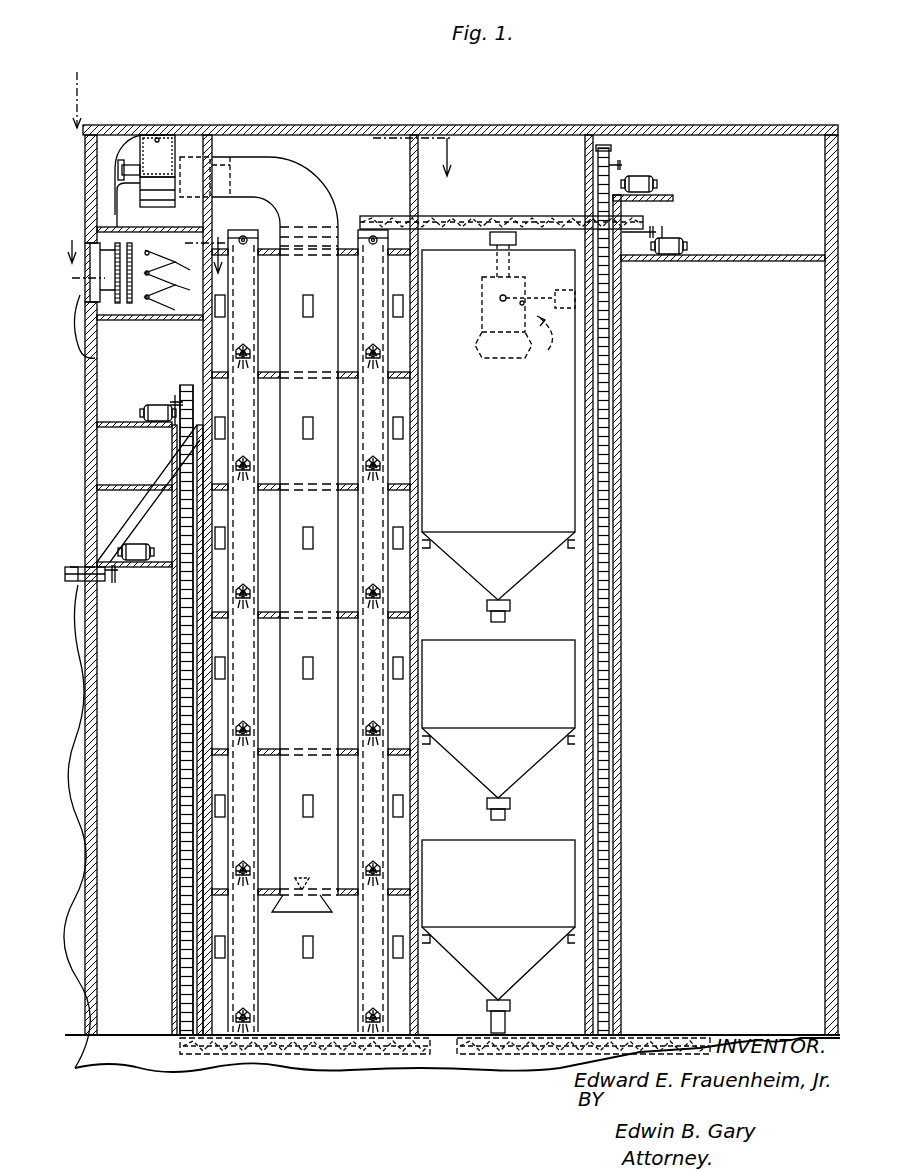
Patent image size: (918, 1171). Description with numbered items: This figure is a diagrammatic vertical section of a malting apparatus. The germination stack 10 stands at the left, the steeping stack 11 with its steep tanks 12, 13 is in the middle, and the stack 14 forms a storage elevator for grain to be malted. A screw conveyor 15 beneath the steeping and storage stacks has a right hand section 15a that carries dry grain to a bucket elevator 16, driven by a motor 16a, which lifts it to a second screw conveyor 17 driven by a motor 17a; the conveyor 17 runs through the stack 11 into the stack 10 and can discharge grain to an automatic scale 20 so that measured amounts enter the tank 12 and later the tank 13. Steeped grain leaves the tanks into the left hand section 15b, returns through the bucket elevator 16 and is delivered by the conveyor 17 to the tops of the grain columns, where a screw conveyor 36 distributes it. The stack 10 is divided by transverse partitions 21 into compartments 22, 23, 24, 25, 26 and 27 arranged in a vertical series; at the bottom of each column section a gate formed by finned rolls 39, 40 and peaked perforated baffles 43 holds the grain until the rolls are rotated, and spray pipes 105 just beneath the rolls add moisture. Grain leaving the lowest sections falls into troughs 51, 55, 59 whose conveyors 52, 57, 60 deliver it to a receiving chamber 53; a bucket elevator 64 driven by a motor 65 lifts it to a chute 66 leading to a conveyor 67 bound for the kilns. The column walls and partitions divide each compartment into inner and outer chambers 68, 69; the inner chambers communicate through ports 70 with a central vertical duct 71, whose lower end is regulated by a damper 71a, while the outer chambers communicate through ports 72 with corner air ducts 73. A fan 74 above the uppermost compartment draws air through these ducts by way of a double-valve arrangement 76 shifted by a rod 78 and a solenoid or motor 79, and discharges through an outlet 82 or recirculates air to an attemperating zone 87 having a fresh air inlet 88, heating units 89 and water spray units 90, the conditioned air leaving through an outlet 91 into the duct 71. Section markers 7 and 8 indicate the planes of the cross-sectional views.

The section line 7- 7 is at (269, 113).
The section line 8- 8 is at (146, 242).
The stack 10 is at (325, 135).
The stack 11 is at (540, 140).
The steep tank 12 is at (560, 622).
The steep tank 13 is at (550, 848).
The stack 14 is at (770, 270).
The screw conveyor 15 is at (623, 1036).
The right hand section 15a is at (692, 1040).
The left hand section 15b is at (545, 1042).
The bucket elevator 16 is at (605, 412).
The motor 16a is at (650, 170).
The screw conveyor 17 is at (550, 225).
The motor 17a is at (665, 235).
The automatic scale 20 is at (549, 352).
The transverse partitions 21 is at (268, 255).
The compartment 22 is at (340, 342).
The compartment 23 is at (343, 468).
The compartment 24 is at (343, 596).
The compartment 25 is at (340, 733).
The compartment 26 is at (340, 840).
The compartment 27 is at (330, 972).
The screw conveyor 36 is at (250, 230).
The finned roll 39 is at (230, 872).
The finned roll 40 is at (236, 885).
The baffles 43 is at (235, 868).
The trough 51 is at (295, 1055).
The screw conveyor 52 is at (310, 1055).
The receiving chamber 53 is at (175, 1050).
The trough 55 is at (360, 1035).
The conveyor 57 is at (345, 1030).
The trough 59 is at (245, 1035).
The conveyor 60 is at (252, 1025).
The bucket elevator 64 is at (175, 738).
The motor 65 is at (157, 404).
The chute 66 is at (168, 452).
The conveyor 67 is at (83, 590).
The inner chambers 68 is at (390, 385).
The outer chambers 69 is at (404, 412).
The ports 70 is at (300, 305).
The central vertical duct 71 is at (360, 440).
The damper 71a is at (295, 903).
The ports 72 is at (404, 310).
The vertical air ducts 73 is at (404, 700).
The fan 74 is at (218, 165).
The double-valve arrangement 76 is at (195, 157).
The rod 78 is at (490, 240).
The motor 79 is at (585, 350).
The outlet 82 is at (160, 135).
The attemperating zone 87 is at (132, 300).
The inlet 88 is at (100, 356).
The units 89 is at (118, 300).
The water spray units 90 is at (160, 290).
The outlet 91 is at (195, 222).
The spray pipes 105 is at (380, 490).